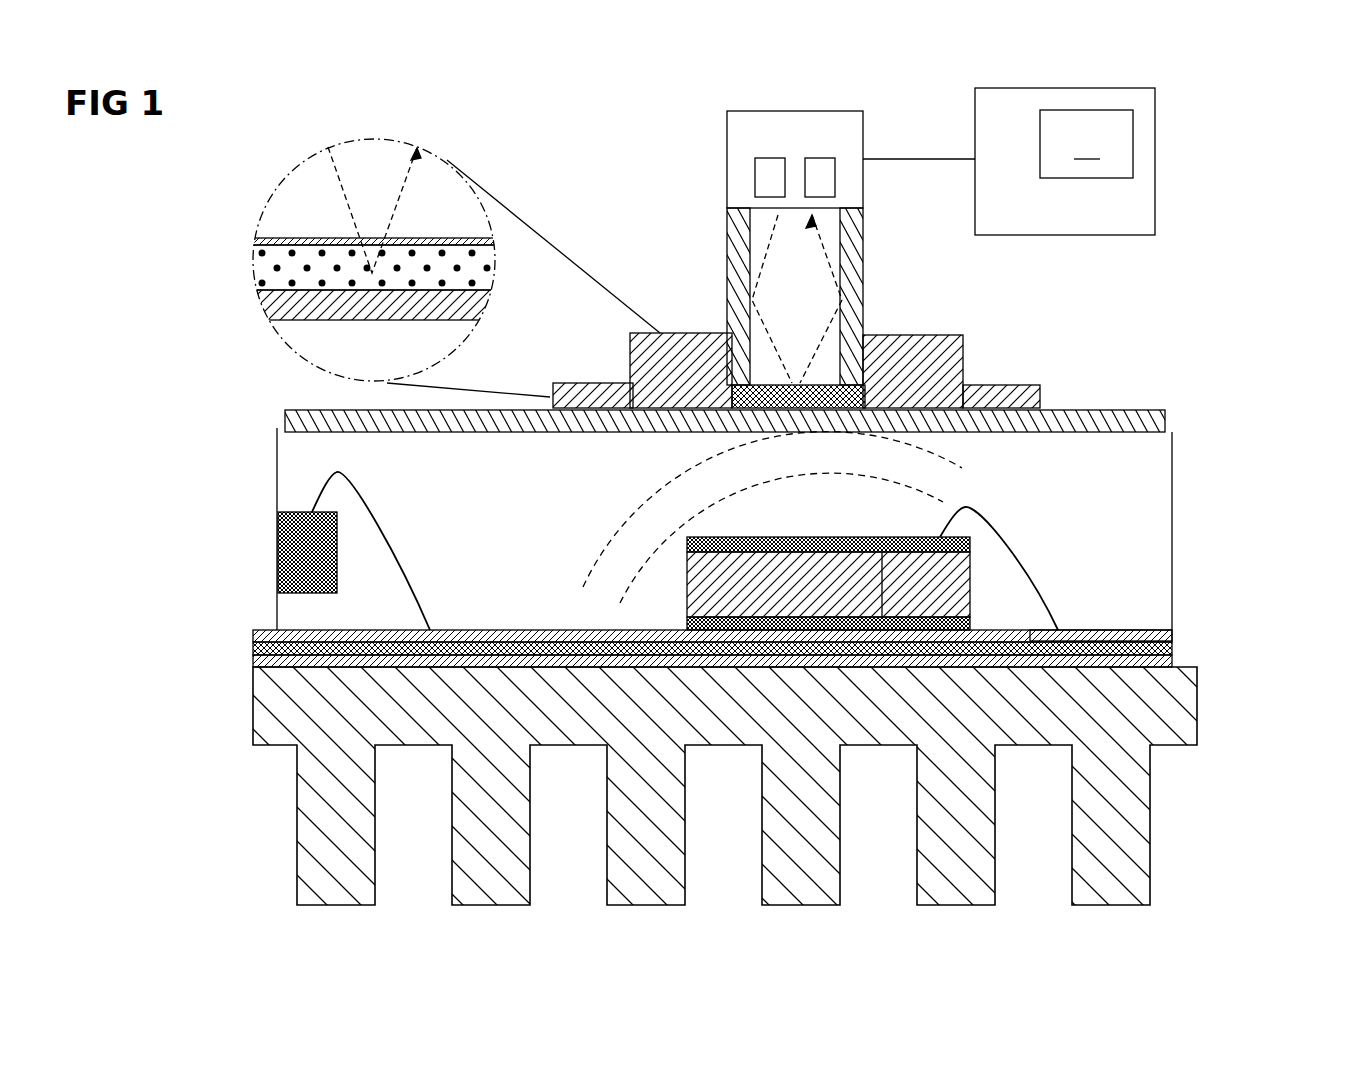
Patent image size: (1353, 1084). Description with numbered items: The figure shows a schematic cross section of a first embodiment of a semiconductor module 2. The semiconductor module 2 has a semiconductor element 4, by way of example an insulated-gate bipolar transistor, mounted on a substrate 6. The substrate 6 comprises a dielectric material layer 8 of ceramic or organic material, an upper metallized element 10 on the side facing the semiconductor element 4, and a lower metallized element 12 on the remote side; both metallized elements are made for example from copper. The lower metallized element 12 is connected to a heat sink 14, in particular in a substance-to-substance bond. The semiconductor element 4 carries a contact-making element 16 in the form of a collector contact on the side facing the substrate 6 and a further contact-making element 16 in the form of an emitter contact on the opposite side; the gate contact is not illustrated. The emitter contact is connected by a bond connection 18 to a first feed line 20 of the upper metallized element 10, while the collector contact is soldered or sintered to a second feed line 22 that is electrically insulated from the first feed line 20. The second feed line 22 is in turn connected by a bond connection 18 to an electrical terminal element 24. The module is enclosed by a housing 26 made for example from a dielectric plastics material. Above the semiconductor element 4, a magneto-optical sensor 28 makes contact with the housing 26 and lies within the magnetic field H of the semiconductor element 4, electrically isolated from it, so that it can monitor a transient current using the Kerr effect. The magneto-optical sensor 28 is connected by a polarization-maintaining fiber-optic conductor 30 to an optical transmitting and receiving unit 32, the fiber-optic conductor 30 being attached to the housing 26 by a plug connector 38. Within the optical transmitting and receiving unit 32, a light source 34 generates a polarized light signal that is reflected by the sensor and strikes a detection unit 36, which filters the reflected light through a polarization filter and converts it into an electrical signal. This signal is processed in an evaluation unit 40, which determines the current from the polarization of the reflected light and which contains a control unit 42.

The semiconductor module 2 is at (1288, 145).
The semiconductor element 4 is at (712, 600).
The substrate 6 is at (253, 648).
The dielectric material layer 8 is at (702, 646).
The upper metallized element 10 is at (1174, 634).
The lower metallized element 12 is at (254, 660).
The heat sink 14 is at (1135, 834).
The contact-making element 16 is at (730, 640).
The bond connection 18 is at (408, 550).
The first feed line 20 is at (1112, 630).
The second feed line 22 is at (255, 632).
The electrical terminal element 24 is at (278, 552).
The housing 26 is at (1108, 412).
The magneto-optical sensor 28 is at (866, 386).
The fiber-optic conductor 30 is at (876, 250).
The optical transmitting and receiving unit 32 is at (790, 159).
The light source 34 is at (755, 180).
The detection unit 36 is at (836, 182).
The plug connector 38 is at (1000, 405).
The evaluation unit 40 is at (1103, 161).
The control unit 42 is at (1086, 144).
The magnetic field H is at (938, 486).